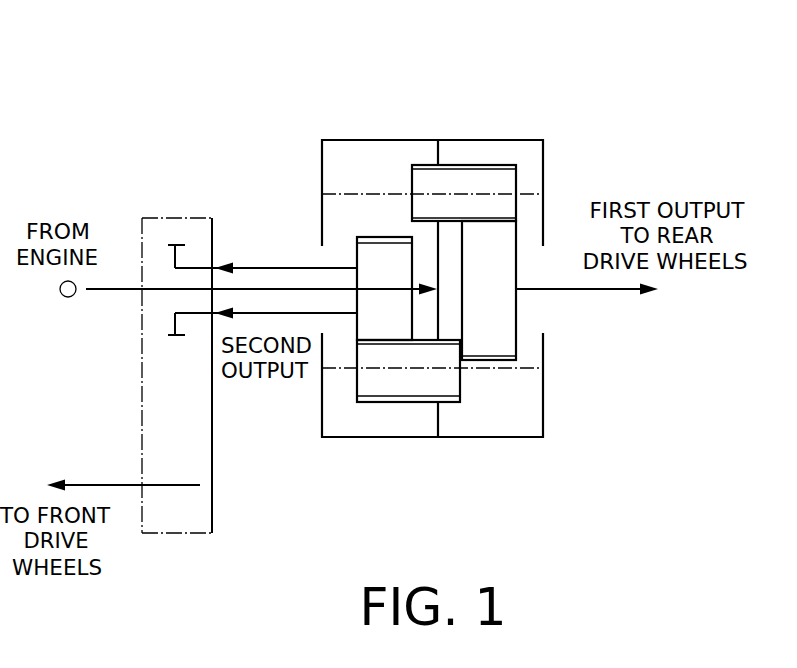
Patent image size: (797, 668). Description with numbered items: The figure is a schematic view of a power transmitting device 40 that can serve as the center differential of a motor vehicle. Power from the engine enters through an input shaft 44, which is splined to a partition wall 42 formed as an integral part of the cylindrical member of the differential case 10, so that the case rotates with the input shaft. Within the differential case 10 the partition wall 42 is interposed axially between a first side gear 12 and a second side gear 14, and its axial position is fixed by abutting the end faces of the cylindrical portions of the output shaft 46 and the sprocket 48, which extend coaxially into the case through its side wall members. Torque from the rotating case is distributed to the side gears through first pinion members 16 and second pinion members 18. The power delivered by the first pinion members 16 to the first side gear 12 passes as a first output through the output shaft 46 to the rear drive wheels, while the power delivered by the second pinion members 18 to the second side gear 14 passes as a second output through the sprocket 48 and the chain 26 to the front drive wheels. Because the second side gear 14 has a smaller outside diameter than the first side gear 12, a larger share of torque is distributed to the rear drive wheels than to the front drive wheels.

The differential case 10 is at (346, 140).
The first side gear 12 is at (493, 338).
The second side gear 14 is at (383, 260).
The first pinion members 16 is at (470, 182).
The second pinion members 18 is at (375, 383).
The sprocket and chain 26 is at (160, 533).
The power transmitting device 40 is at (580, 90).
The partition wall 42 is at (436, 420).
The input shaft 44 is at (300, 288).
The output shaft 46 is at (575, 291).
The sprocket 48 is at (172, 338).